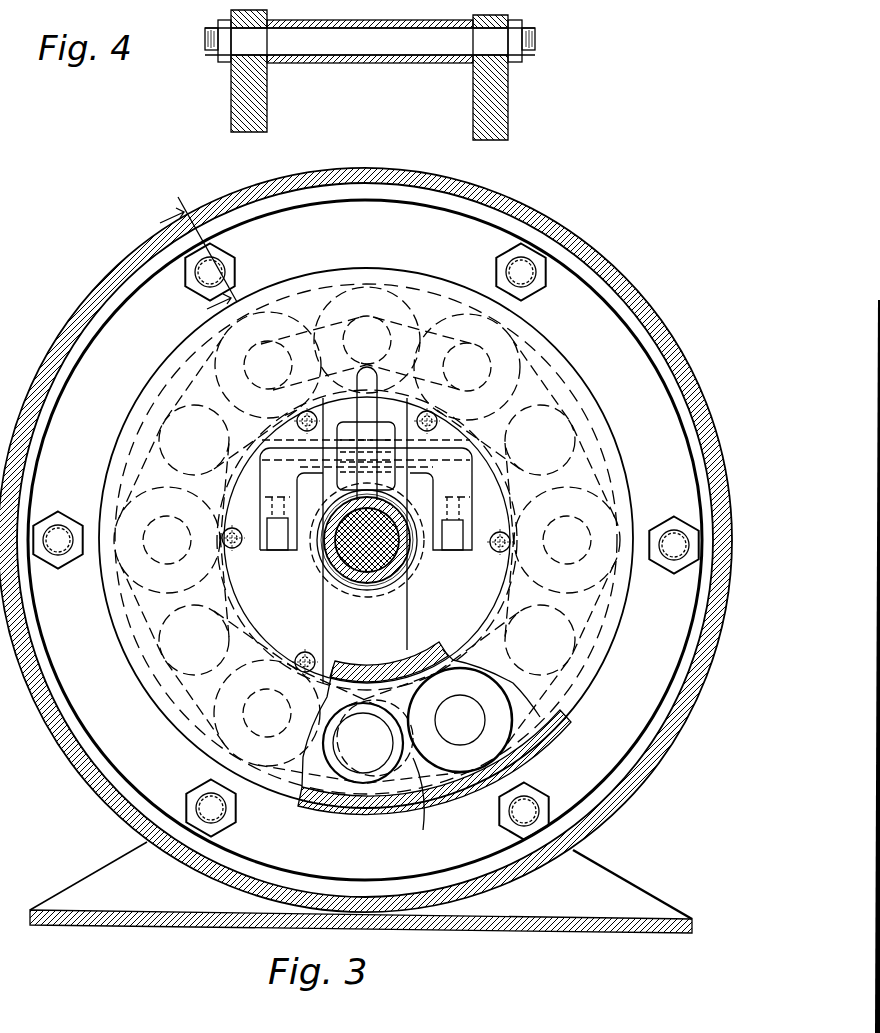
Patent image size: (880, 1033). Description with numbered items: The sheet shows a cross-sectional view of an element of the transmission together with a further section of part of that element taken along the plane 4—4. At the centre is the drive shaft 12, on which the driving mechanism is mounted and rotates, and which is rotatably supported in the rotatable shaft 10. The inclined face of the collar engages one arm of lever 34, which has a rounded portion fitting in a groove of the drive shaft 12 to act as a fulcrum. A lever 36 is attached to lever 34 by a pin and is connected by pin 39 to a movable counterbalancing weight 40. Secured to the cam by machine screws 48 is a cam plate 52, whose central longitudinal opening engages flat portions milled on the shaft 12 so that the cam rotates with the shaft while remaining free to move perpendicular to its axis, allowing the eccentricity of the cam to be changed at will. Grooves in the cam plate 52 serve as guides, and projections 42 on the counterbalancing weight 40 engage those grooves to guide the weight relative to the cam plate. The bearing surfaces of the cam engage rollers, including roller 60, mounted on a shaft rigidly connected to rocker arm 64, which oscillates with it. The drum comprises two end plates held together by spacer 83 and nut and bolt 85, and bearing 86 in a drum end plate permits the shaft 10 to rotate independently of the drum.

In FIG. 3, the section plane 4— 4 is at (186, 261).
In FIG. 3, the rotatable shaft 10 is at (362, 583).
In FIG. 3, the drive shaft 12 is at (392, 578).
In FIG. 3, the lever 34 is at (370, 410).
In FIG. 3, the lever 36 is at (470, 460).
In FIG. 3, the pin 39 is at (462, 537).
In FIG. 3, the counterbalancing weight 40 is at (400, 568).
In FIG. 3, the projections 42 is at (445, 652).
In FIG. 3, the machine screws 48 is at (432, 422).
In FIG. 3, the cam plate 52 is at (502, 480).
In FIG. 3, the roller 60 is at (497, 747).
In FIG. 3, the rocker arm 64 is at (413, 760).
In FIG. 4, the spacer 83 is at (442, 63).
In FIG. 4, the nut and bolt 85 is at (360, 50).
In FIG. 3, the nut and bolt 85 is at (676, 574).
In FIG. 4, the bearing 86 is at (231, 107).